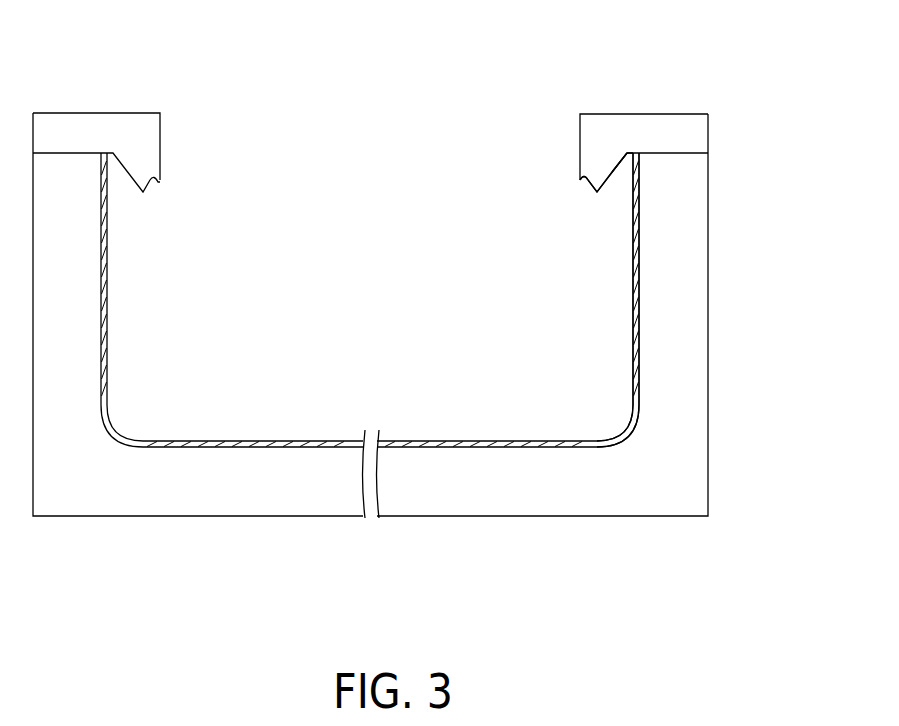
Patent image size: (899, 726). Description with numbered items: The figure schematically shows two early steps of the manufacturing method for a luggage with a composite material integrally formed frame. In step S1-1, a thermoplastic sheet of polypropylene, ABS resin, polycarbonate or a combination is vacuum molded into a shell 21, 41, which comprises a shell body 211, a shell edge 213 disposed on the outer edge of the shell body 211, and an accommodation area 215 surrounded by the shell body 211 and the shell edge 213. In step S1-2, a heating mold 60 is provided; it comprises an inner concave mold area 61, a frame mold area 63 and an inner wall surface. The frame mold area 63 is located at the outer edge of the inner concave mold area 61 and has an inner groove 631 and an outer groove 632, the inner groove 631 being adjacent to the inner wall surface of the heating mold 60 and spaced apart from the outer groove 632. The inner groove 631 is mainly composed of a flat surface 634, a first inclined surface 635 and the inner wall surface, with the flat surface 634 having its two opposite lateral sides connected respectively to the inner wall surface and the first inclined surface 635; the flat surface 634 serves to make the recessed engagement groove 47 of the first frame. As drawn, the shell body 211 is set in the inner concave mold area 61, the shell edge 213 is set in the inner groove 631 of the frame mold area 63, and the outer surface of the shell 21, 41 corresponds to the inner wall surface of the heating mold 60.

The shell 21 is at (476, 300).
The shell 41 is at (785, 225).
The shell body 211 is at (640, 391).
The shell edge 213 is at (640, 212).
The accommodation area 215 is at (588, 340).
The recessed engagement groove 47 is at (620, 190).
The heating mold 60 is at (432, 534).
The inner concave mold area 61 is at (515, 468).
The frame mold area 63 is at (658, 182).
The inner groove 631 is at (667, 62).
The outer groove 632 is at (581, 181).
The flat surface 634 is at (628, 156).
The first inclined surface 635 is at (612, 172).
The step S1-1 is at (65, 29).
The step S1-2 is at (67, 78).